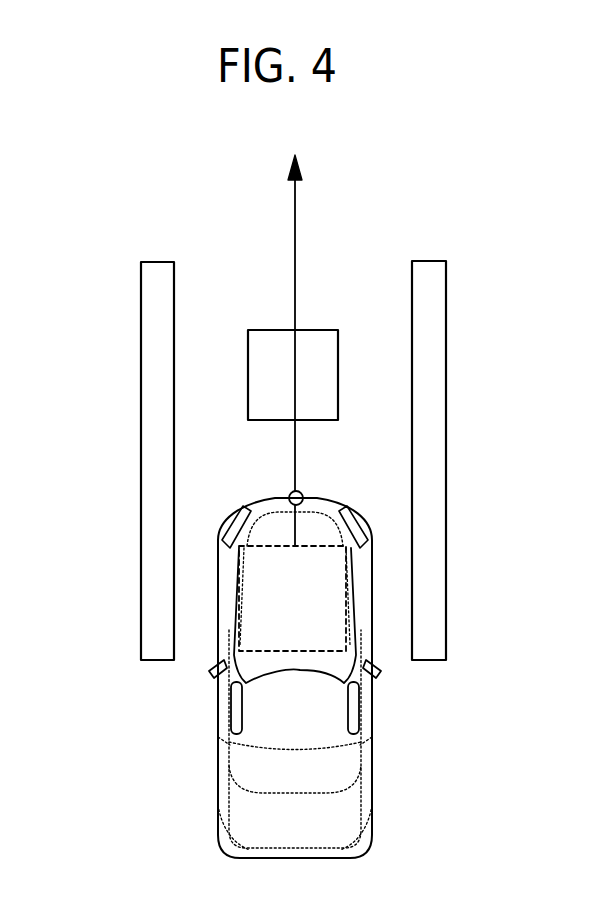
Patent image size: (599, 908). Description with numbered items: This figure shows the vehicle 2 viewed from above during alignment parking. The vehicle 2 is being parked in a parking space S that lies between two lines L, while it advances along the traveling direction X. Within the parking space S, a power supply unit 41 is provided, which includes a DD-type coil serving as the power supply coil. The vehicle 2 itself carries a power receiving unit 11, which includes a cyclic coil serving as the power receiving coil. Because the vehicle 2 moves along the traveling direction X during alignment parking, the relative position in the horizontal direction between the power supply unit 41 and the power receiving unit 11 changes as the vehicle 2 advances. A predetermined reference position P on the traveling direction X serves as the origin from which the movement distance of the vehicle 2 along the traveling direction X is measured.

The parking space S is at (201, 238).
The traveling direction X is at (298, 220).
The lines L is at (156, 313).
The power supply unit 41 is at (261, 335).
The reference position P is at (288, 499).
The vehicle 2 is at (217, 760).
The power receiving unit 11 is at (237, 603).